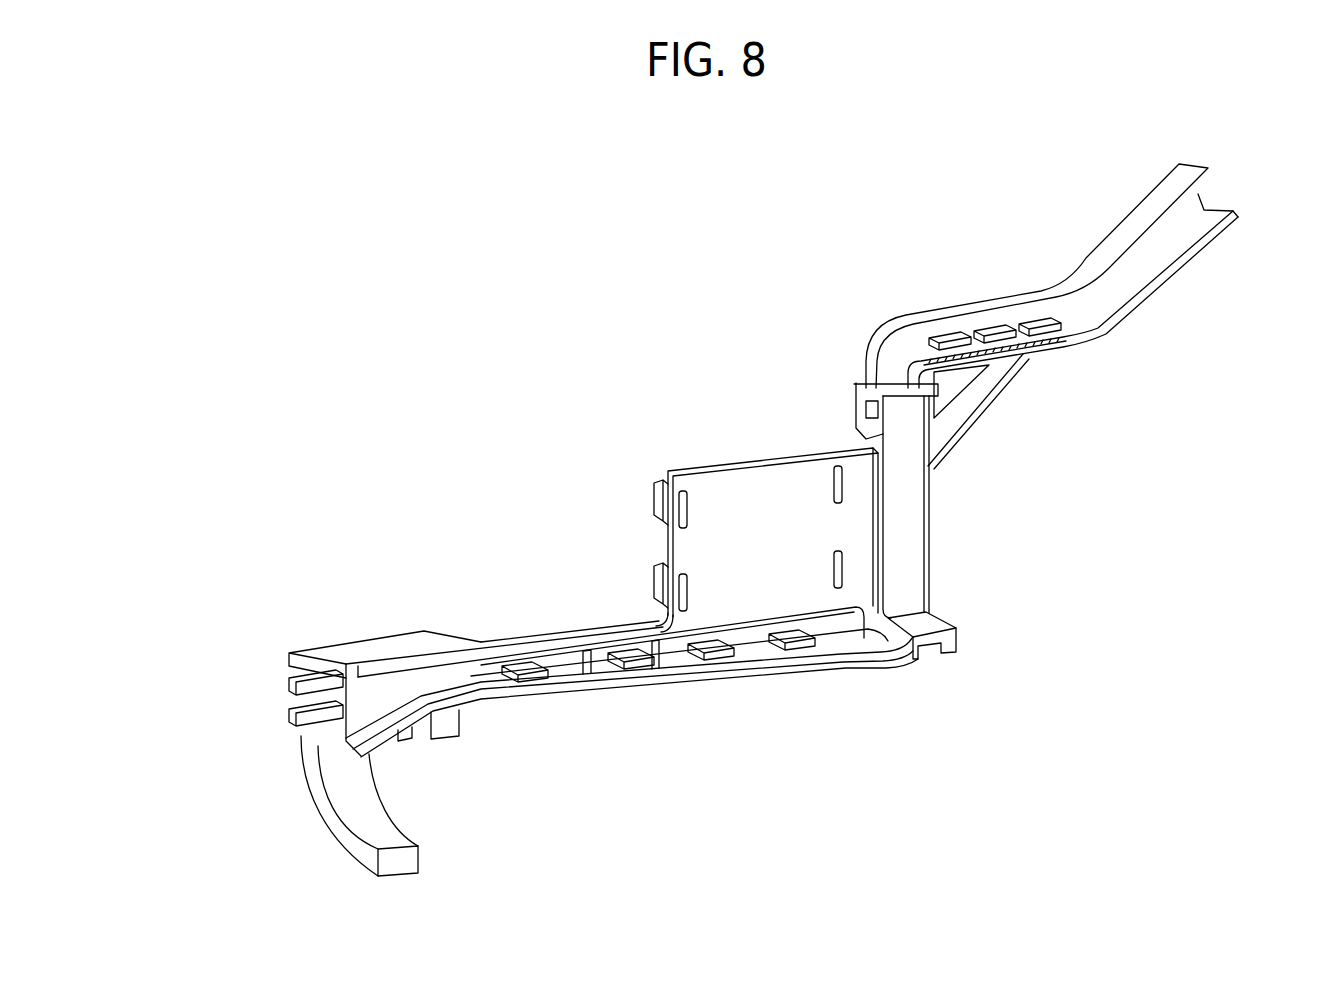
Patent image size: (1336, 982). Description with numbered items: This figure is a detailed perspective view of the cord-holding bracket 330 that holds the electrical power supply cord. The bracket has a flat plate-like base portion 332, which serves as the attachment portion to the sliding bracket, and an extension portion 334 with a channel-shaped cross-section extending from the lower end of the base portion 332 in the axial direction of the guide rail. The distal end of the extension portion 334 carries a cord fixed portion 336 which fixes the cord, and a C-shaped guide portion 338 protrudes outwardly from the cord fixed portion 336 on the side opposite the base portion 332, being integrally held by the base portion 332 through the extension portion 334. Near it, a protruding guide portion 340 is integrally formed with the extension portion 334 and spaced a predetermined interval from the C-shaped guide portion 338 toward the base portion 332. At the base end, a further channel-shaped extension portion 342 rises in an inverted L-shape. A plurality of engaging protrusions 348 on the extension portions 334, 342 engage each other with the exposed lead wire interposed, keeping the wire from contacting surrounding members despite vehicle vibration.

The cord-holding bracket 330 is at (655, 448).
The base portion 332 is at (770, 477).
The extension portion 334 is at (518, 648).
The cord fixed portion 336 is at (293, 686).
The C-shaped guide portion 338 is at (340, 808).
The protruding guide portion 340 is at (447, 733).
The extension portion 342 is at (1067, 342).
The engaging protrusions 348 is at (530, 676).